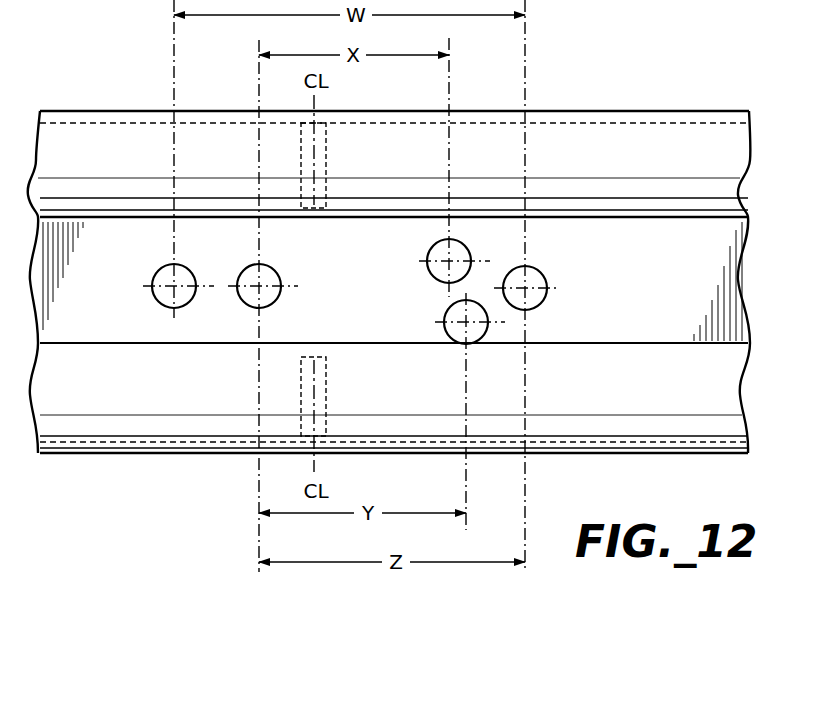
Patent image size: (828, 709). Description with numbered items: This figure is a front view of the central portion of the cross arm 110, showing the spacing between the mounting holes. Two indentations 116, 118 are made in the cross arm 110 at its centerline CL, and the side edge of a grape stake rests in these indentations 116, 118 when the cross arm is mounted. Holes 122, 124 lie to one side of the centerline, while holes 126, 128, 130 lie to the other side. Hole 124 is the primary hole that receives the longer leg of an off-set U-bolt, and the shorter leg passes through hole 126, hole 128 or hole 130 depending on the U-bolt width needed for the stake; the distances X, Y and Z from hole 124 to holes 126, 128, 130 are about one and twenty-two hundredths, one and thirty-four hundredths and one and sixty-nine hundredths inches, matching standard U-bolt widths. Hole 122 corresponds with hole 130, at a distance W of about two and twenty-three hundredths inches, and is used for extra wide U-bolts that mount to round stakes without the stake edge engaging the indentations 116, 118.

The cross arm 110 is at (630, 95).
The indentation 116 is at (320, 175).
The indentation 118 is at (320, 398).
The hole 122 is at (160, 279).
The hole 124 is at (270, 272).
The hole 126 is at (430, 259).
The hole 128 is at (447, 318).
The hole 130 is at (538, 270).